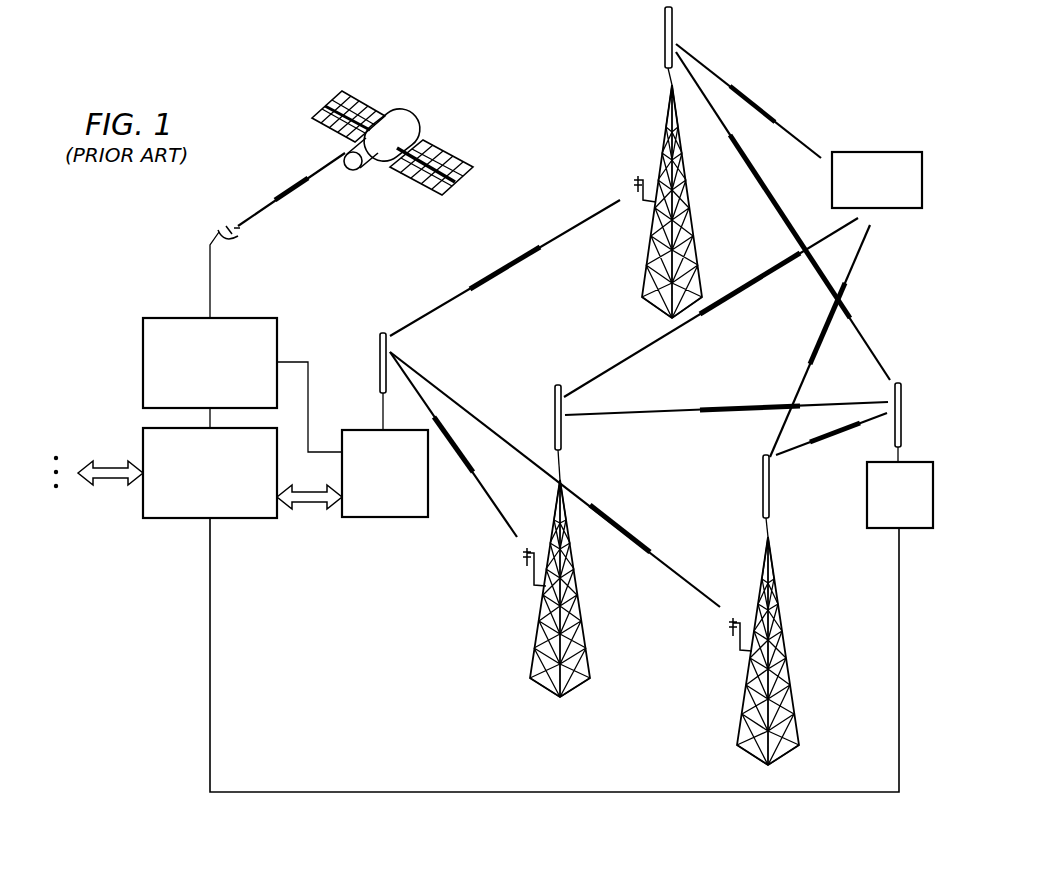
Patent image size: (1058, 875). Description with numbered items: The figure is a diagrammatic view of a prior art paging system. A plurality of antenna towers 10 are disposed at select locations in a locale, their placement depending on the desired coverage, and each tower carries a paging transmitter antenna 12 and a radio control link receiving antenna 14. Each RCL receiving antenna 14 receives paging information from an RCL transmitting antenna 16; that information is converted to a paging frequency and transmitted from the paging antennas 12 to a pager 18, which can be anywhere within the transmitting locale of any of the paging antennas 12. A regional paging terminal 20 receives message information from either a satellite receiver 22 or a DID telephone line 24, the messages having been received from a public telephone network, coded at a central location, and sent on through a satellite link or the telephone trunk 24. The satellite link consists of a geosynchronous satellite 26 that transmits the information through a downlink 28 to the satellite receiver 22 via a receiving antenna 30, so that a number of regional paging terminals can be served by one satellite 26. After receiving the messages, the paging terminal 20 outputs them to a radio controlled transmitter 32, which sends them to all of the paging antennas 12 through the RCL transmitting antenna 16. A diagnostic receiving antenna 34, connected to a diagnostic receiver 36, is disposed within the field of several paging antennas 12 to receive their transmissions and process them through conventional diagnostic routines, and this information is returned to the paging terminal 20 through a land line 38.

The antenna tower 10 is at (650, 258).
The paging transmitter antenna 12 is at (665, 36).
The RCL receiving antenna 14 is at (639, 178).
The RCL transmitting antenna 16 is at (381, 332).
The pager 18 is at (886, 152).
The regional paging terminal 20 is at (179, 518).
The satellite receiver 22 is at (143, 367).
The DID telephone line 24 is at (108, 462).
The geosynchronous satellite 26 is at (415, 126).
The downlink 28 is at (286, 208).
The receiving antenna 30 is at (210, 236).
The radio controlled transmitter (RCLT) 32 is at (388, 518).
The diagnostic receiving antenna 34 is at (898, 435).
The diagnostic receiver (DR) 36 is at (886, 532).
The land line 38 is at (208, 664).